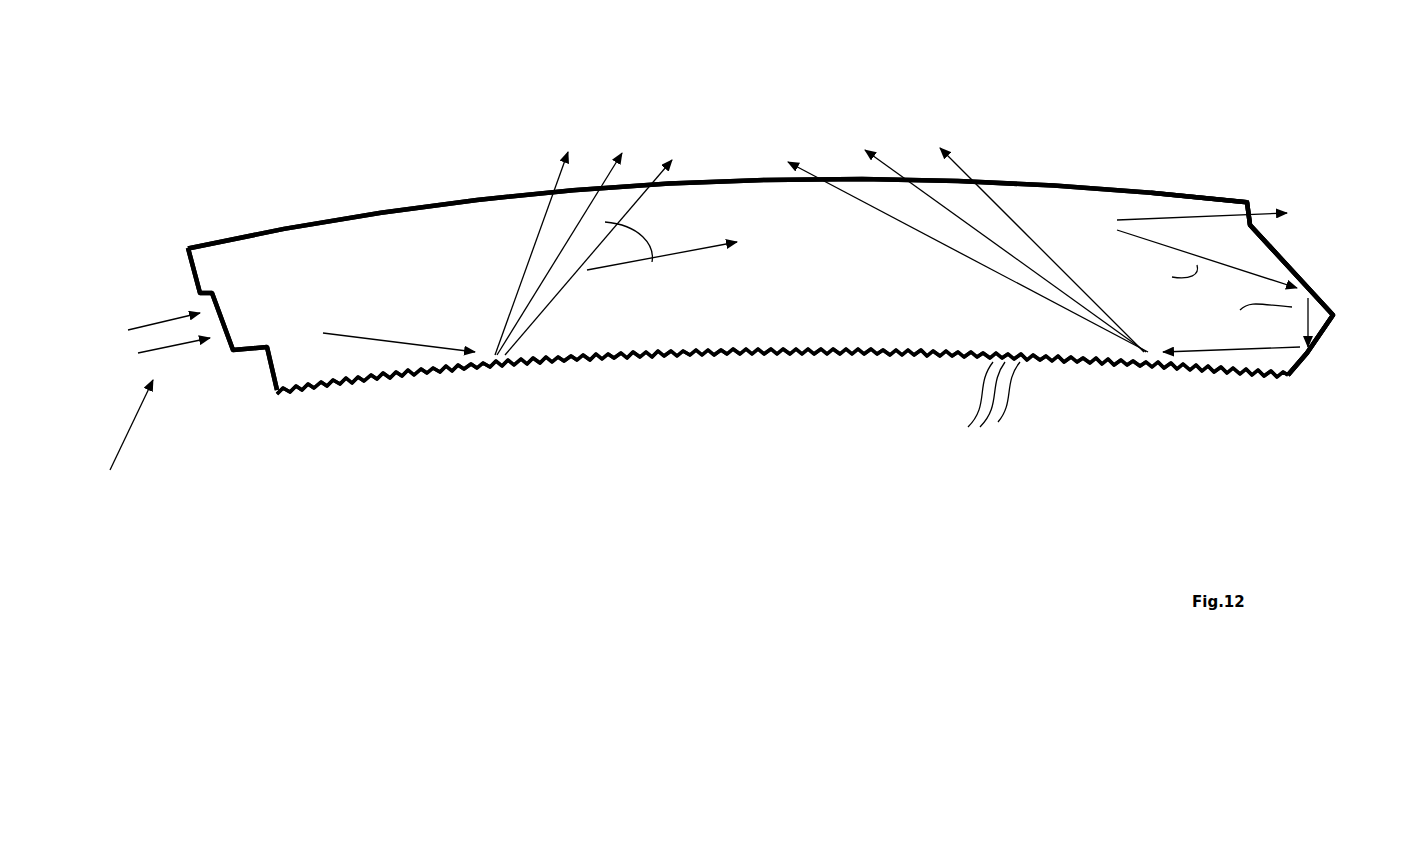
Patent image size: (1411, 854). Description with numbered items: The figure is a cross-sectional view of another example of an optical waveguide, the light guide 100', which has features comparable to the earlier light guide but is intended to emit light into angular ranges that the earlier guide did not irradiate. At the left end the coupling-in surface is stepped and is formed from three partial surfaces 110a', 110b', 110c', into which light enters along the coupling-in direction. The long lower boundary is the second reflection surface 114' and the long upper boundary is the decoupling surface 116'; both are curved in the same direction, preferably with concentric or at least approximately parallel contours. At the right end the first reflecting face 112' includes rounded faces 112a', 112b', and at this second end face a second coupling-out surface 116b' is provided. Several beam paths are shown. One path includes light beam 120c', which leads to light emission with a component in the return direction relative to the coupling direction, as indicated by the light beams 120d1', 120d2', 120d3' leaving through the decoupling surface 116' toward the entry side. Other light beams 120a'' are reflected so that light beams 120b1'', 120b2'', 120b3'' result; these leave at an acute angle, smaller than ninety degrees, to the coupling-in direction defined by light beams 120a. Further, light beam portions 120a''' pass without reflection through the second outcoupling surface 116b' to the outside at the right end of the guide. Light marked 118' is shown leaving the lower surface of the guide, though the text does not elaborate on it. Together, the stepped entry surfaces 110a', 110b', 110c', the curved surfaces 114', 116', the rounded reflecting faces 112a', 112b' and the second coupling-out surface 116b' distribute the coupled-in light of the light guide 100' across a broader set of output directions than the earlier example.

The light guide 100' is at (760, 405).
The decoupling surface 116' is at (717, 198).
The second coupling-out surface 116b' is at (1228, 151).
The second reflection surface 114' is at (782, 434).
The first reflecting face 112' is at (1324, 331).
The rounded face 112a' is at (1311, 270).
The rounded face 112b' is at (1294, 395).
The partial surface 110a' is at (248, 270).
The partial surface 110b' is at (274, 321).
The partial surface 110c' is at (226, 379).
The emitted light/heat 118' is at (991, 411).
The light beams 120a is at (439, 218).
The light beams 120a'' is at (399, 295).
The light beam portions 120a''' is at (1212, 240).
The light beam 120b1'' is at (499, 253).
The light beam 120b2'' is at (559, 209).
The light beam 120b3'' is at (600, 199).
The light beam 120c' is at (1230, 411).
The light beam 120d1' is at (1042, 244).
The light beam 120d2' is at (1005, 221).
The light beam 120d3' is at (967, 221).